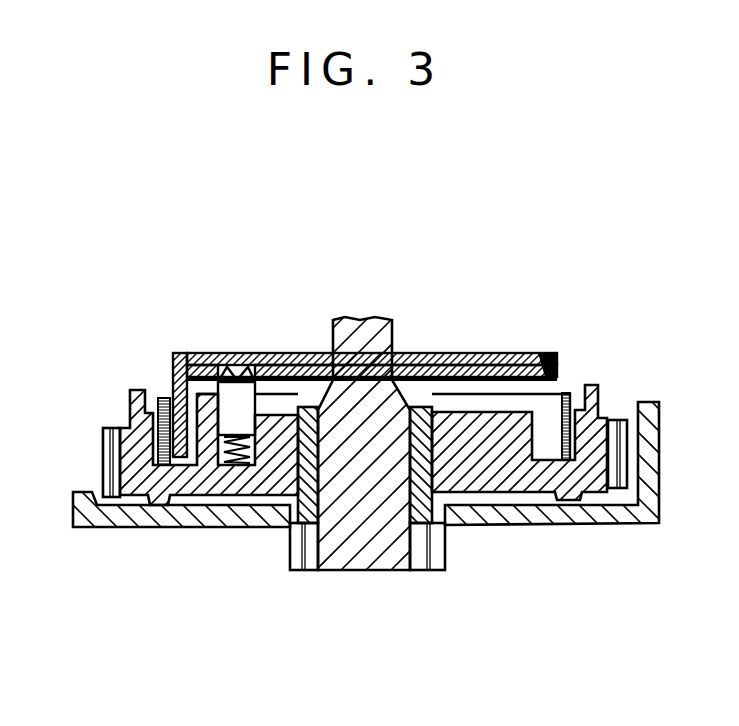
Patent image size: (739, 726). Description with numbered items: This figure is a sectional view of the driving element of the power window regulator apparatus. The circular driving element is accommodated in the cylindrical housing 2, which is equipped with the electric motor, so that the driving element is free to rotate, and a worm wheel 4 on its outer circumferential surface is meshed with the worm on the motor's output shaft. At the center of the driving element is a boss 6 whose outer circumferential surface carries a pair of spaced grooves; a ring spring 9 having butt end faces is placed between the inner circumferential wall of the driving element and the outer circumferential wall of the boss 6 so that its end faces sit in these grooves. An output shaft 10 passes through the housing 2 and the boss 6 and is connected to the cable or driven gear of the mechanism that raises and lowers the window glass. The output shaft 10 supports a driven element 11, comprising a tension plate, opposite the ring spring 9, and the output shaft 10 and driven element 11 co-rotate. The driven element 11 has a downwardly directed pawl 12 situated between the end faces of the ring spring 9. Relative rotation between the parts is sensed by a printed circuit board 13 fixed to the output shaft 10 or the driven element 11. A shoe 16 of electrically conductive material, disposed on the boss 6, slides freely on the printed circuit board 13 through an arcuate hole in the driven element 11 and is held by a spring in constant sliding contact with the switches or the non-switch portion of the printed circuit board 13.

The cylindrical housing 2 is at (140, 527).
The worm wheel 4 is at (102, 452).
The boss 6 is at (233, 495).
The ring spring 9 is at (485, 398).
The output shaft 10 is at (370, 360).
The driven element 11 is at (558, 372).
The pawl 12 is at (173, 388).
The printed circuit board 13 is at (285, 353).
The shoe 16 is at (207, 380).